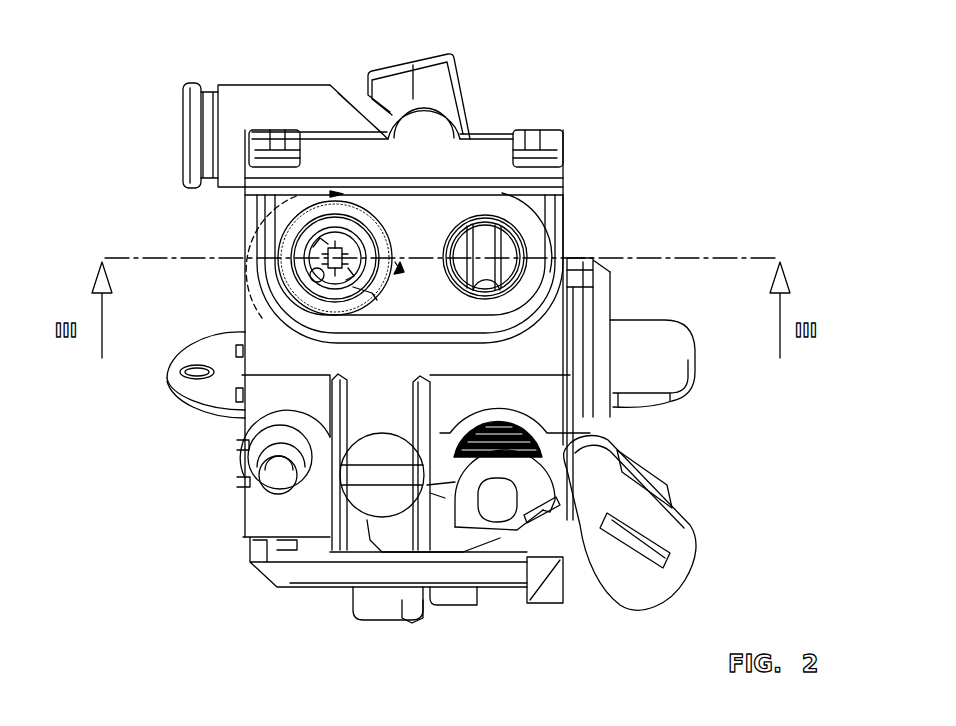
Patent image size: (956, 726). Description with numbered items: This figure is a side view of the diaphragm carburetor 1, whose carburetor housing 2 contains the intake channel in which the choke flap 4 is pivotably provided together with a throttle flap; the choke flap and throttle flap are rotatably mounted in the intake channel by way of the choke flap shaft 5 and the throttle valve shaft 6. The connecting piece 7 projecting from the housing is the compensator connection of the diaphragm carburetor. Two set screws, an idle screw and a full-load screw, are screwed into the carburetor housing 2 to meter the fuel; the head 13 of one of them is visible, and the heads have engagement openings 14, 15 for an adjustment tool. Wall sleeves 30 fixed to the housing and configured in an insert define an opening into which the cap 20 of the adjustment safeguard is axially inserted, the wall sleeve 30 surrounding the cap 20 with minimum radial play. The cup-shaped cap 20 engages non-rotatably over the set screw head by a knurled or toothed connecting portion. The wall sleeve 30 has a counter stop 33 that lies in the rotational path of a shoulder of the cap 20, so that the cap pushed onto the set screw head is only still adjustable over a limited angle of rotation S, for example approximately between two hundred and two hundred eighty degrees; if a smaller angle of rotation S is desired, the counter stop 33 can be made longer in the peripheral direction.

The carburetor 1 is at (700, 167).
The carburetor housing 2 is at (242, 464).
The choke flap 4 is at (203, 410).
The choke flap shaft 5 is at (280, 478).
The throttle valve shaft 6 is at (495, 505).
The connecting piece 7 is at (180, 128).
The head 13 is at (510, 252).
The engagement opening 14 is at (302, 268).
The engagement opening 15 is at (488, 235).
The cap 20 is at (293, 250).
The wall sleeve 30 is at (591, 281).
The counter stop 33 is at (365, 236).
The angle of rotation S is at (262, 318).